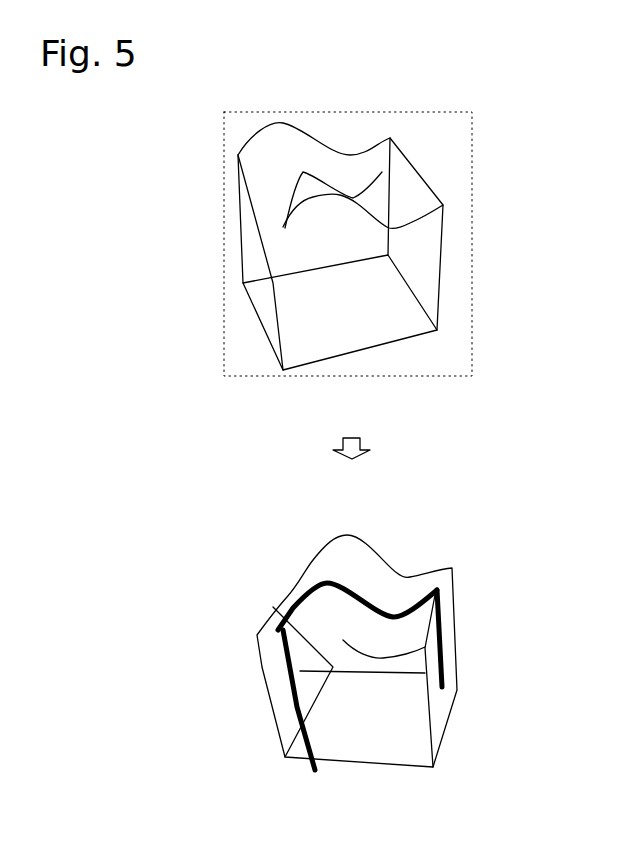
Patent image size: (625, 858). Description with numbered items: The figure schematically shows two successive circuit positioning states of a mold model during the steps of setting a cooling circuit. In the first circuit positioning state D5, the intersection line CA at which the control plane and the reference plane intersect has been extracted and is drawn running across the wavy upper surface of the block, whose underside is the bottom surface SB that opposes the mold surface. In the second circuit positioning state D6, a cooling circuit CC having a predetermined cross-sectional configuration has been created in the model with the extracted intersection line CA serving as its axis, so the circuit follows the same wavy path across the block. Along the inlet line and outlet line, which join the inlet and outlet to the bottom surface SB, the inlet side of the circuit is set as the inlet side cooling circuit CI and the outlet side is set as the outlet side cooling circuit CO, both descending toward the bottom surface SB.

The circuit positioning state D5 is at (447, 243).
The circuit positioning state D6 is at (455, 600).
The intersection line CA is at (363, 215).
The bottom surface SB is at (347, 479).
The cooling circuit CC is at (412, 612).
The inlet side cooling circuit CI is at (300, 710).
The outlet side cooling circuit CO is at (443, 643).